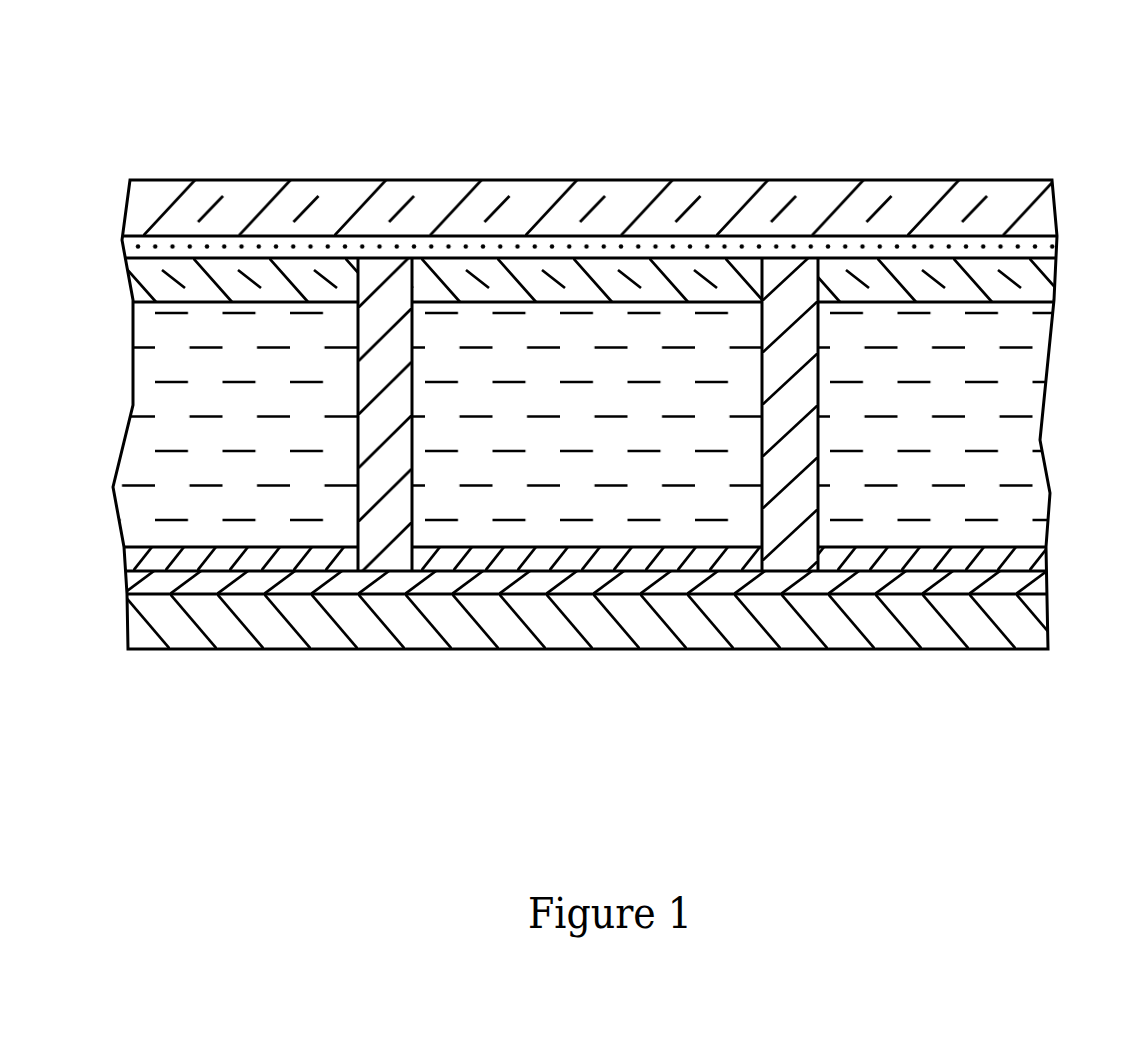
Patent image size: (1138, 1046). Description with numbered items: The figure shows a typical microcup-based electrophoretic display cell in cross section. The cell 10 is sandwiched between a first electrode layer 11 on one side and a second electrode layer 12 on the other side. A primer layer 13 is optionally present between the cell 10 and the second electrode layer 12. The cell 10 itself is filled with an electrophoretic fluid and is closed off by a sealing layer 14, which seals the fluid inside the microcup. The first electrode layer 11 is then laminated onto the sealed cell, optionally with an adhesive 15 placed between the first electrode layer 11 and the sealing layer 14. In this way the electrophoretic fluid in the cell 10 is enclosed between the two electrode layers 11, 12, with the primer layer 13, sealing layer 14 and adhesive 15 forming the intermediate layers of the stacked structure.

The cell 10 is at (1010, 139).
The first electrode layer 11 is at (781, 195).
The second electrode layer 12 is at (835, 625).
The primer layer 13 is at (370, 580).
The sealing layer 14 is at (563, 272).
The adhesive 15 is at (292, 250).